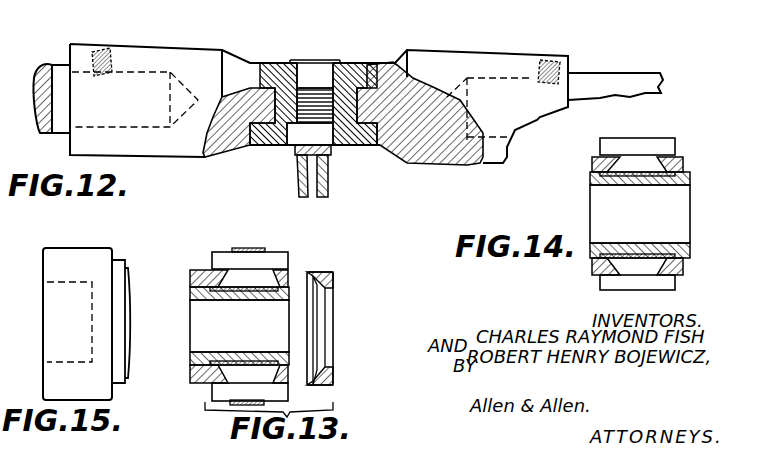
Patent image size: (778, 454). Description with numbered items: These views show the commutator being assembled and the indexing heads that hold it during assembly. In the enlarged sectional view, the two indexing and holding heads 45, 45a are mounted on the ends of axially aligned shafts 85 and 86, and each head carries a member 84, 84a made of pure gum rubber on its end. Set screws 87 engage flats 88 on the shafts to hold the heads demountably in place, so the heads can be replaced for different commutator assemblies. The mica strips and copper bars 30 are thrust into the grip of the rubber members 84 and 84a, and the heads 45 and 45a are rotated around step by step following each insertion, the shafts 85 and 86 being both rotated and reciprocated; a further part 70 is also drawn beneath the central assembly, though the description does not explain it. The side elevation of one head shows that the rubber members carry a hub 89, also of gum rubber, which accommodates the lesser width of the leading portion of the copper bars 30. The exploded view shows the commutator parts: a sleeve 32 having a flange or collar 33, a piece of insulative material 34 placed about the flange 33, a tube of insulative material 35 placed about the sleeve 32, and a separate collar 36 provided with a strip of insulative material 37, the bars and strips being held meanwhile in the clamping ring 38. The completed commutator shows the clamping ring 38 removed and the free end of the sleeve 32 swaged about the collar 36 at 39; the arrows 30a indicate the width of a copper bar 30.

In FIG. 12, the shaft 85 is at (51, 66).
In FIG. 12, the set screw 87 is at (100, 50).
In FIG. 12, the indexing and holding head 45 is at (224, 52).
In FIG. 12, the rubber member 84 is at (266, 65).
In FIG. 15, the rubber member 84 is at (95, 232).
In FIG. 12, the copper bar 30 is at (318, 72).
In FIG. 14, the copper bar 30 is at (650, 143).
In FIG. 13, the copper bar 30 is at (270, 260).
In FIG. 12, the rubber member 84a is at (362, 65).
In FIG. 12, the indexing and holding head 45a is at (426, 62).
In FIG. 12, the shaft 86 is at (620, 56).
In FIG. 12, the flat 88 is at (80, 76).
In FIG. 12, the sleeve 70 is at (296, 181).
In FIG. 12, the clamping ring 38 is at (330, 156).
In FIG. 13, the clamping ring 38 is at (253, 248).
In FIG. 14, the piece of insulative material 34 is at (597, 156).
In FIG. 13, the piece of insulative material 34 is at (204, 268).
In FIG. 14, the strip of insulative material 37 is at (676, 158).
In FIG. 13, the strip of insulative material 37 is at (318, 273).
In FIG. 14, the separate collar 36 is at (682, 166).
In FIG. 13, the separate collar 36 is at (333, 281).
In FIG. 14, the flange or collar 33 is at (590, 160).
In FIG. 13, the flange or collar 33 is at (190, 287).
In FIG. 14, the tube of insulative material 35 is at (603, 180).
In FIG. 13, the tube of insulative material 35 is at (212, 290).
In FIG. 14, the sleeve 32 is at (620, 245).
In FIG. 13, the sleeve 32 is at (277, 353).
In FIG. 14, the swaged portion 39 is at (689, 177).
In FIG. 14, the arrows 30a is at (594, 289).
In FIG. 15, the hub 89 is at (122, 272).